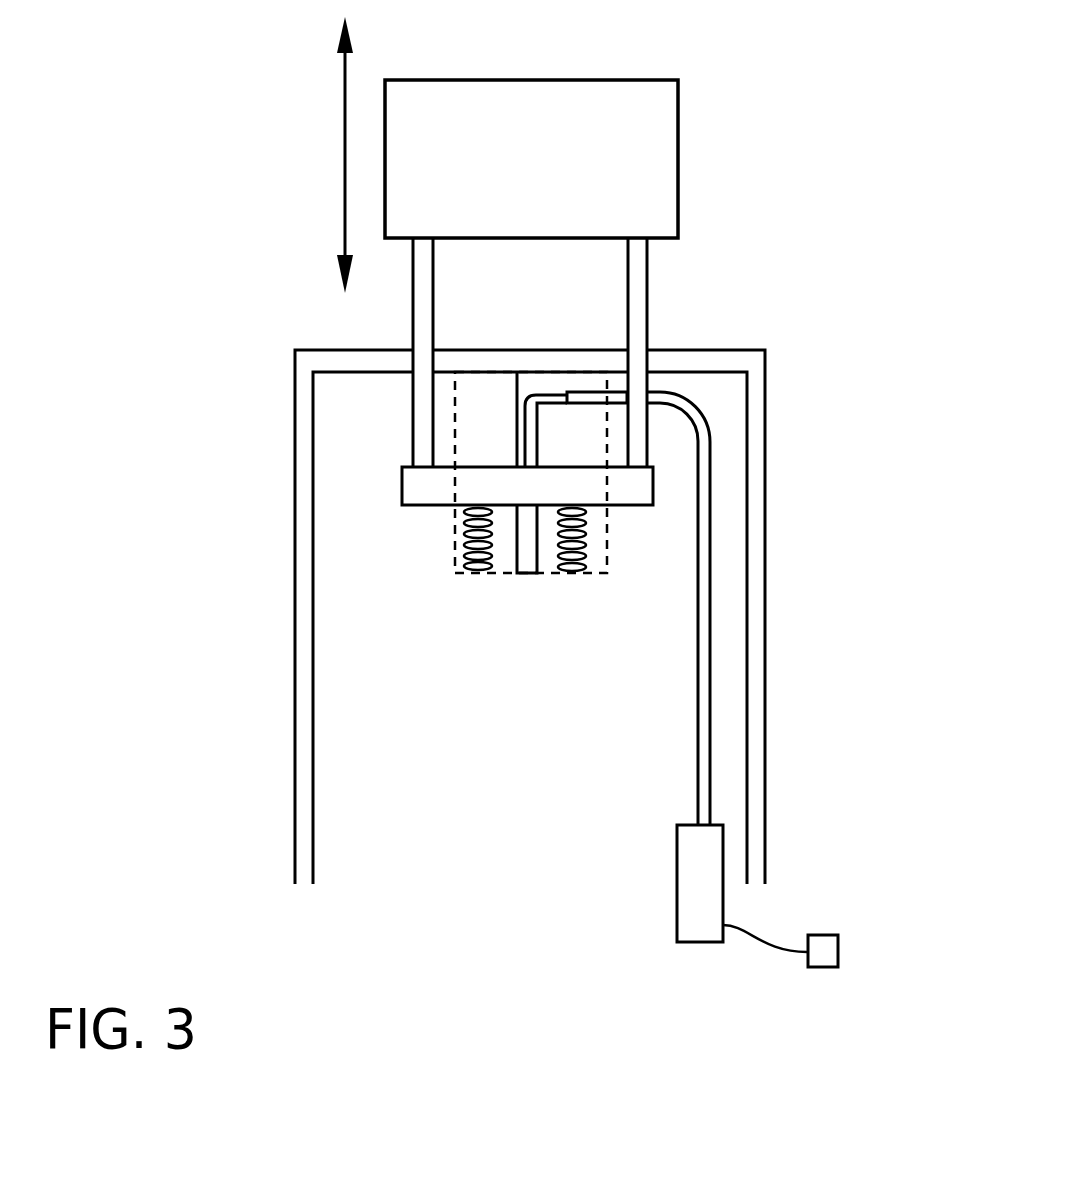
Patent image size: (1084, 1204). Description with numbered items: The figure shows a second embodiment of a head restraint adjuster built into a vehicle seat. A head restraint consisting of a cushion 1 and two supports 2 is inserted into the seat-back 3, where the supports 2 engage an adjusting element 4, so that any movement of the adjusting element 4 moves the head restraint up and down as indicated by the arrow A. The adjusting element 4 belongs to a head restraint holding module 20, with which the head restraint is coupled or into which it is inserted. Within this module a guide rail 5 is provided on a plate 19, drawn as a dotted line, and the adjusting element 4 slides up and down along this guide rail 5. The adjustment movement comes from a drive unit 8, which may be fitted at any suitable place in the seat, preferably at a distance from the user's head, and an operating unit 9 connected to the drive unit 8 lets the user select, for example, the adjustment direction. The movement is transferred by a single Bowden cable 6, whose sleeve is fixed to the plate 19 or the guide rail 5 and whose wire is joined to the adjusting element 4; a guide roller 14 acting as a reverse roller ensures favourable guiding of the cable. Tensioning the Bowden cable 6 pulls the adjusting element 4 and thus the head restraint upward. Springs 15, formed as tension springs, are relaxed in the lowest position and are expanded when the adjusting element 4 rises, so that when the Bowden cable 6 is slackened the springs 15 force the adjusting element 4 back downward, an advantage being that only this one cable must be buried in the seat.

The cushion 1 is at (660, 168).
The supports 2 is at (423, 302).
The seat-back 3 is at (757, 475).
The adjusting element 4 is at (412, 495).
The guide rail 5 is at (537, 563).
The Bowden cable 6 is at (703, 582).
The drive unit 8 is at (690, 882).
The operating unit 9 is at (825, 947).
The guide roller 14 is at (532, 403).
The springs 15 is at (475, 565).
The plate 19 is at (453, 563).
The head restraint holding module 20 is at (383, 450).
The arrow A is at (345, 143).